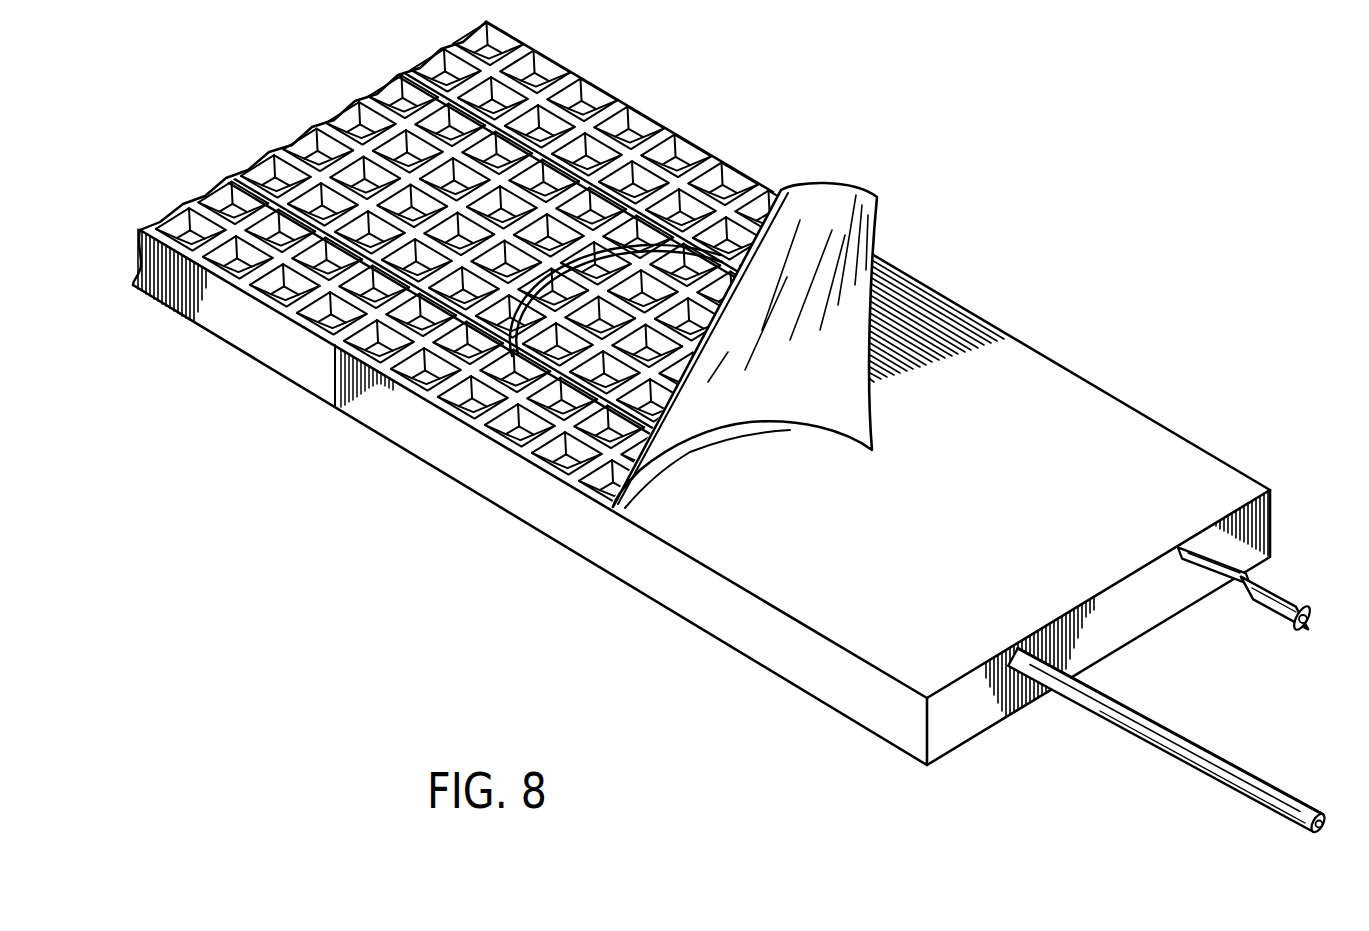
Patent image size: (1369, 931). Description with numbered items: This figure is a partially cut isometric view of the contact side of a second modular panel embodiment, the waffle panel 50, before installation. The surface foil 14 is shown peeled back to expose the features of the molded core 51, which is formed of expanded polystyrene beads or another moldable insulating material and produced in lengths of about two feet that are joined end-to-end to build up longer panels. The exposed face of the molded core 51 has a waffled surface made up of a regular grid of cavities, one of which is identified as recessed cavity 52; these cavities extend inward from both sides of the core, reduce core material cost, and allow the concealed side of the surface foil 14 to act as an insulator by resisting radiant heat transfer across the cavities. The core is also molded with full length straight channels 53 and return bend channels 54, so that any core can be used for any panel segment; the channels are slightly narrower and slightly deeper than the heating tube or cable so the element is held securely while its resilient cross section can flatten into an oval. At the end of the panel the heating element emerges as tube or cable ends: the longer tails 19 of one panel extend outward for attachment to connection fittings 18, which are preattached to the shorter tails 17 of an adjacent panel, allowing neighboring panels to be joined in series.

The surface foil 14 is at (777, 392).
The shorter tails 17 is at (1213, 568).
The connection fittings 18 is at (1272, 600).
The longer tails 19 is at (1110, 700).
The waffle panel 50 is at (1043, 400).
The molded core 51 is at (562, 319).
The recessed cavity 52 is at (440, 376).
The straight channels 53 is at (553, 372).
The return bend channels 54 is at (650, 243).